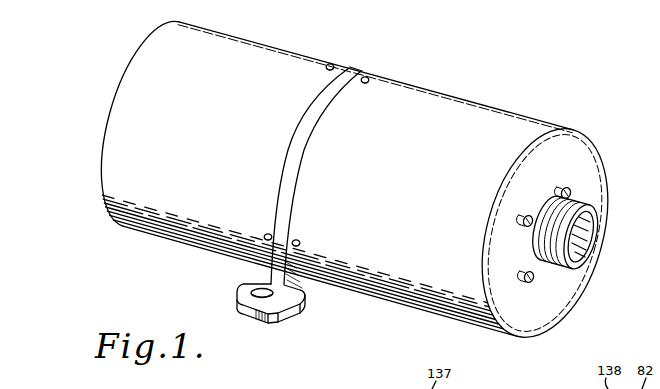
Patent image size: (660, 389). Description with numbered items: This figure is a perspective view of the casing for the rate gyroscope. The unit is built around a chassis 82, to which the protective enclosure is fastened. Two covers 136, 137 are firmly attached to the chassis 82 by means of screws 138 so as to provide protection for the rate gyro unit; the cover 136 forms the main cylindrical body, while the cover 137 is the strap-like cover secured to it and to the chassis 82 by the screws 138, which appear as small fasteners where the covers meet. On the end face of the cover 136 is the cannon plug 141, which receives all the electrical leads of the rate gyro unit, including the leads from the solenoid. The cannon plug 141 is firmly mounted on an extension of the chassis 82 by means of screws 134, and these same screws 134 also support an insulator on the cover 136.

The chassis 82 is at (360, 65).
The screws 134 is at (572, 192).
The cover 136 is at (508, 112).
The cover 137 is at (292, 58).
The screws 138 is at (326, 67).
The cannon plug 141 is at (596, 221).